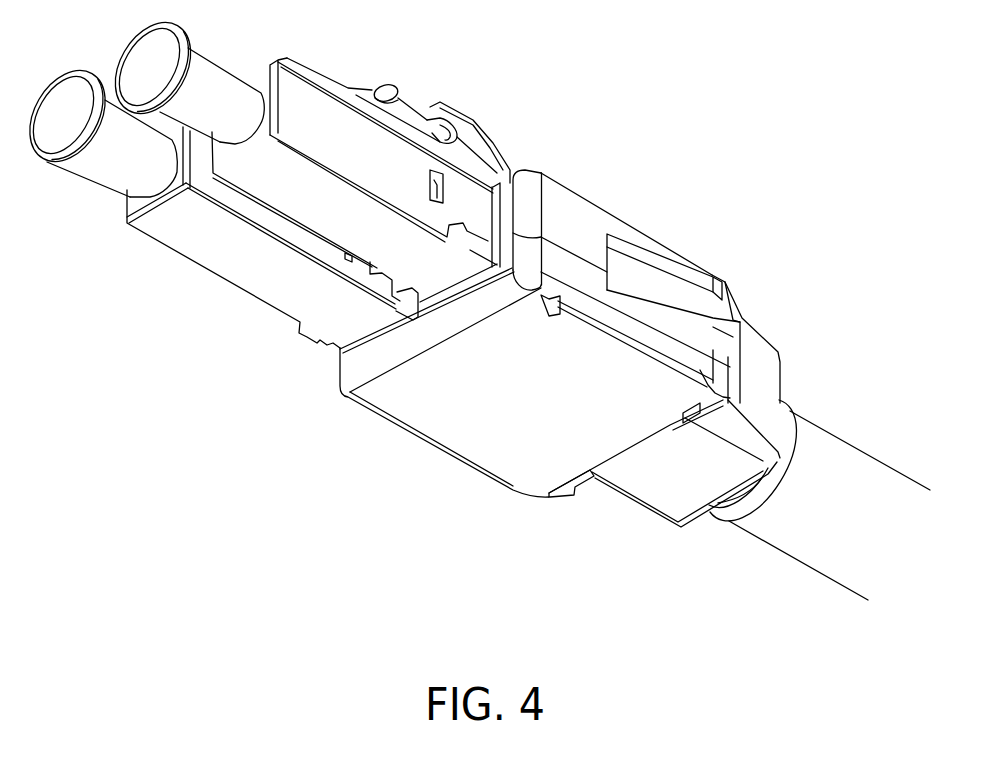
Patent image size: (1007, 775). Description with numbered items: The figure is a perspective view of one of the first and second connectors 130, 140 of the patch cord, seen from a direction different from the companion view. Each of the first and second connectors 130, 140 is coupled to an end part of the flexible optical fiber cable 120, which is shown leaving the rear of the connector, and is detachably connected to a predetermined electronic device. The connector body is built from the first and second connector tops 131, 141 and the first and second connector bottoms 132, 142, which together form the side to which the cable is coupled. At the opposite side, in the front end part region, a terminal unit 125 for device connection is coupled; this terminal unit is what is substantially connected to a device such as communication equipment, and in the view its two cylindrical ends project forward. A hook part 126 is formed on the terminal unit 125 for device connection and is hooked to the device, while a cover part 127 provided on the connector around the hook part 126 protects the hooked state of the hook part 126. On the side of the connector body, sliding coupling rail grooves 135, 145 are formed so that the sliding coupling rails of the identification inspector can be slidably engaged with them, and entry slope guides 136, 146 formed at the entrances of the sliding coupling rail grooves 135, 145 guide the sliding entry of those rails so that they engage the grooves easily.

The optical fiber cable 120 is at (910, 490).
The terminal unit for device connection 125 is at (103, 175).
The hook part 126 is at (413, 112).
The cover part 127 is at (474, 120).
The first connector 130 is at (604, 337).
The second connector 140 is at (868, 187).
The first connector top 131 is at (623, 256).
The second connector top 141 is at (583, 208).
The first connector bottom 132 is at (560, 398).
The second connector bottom 142 is at (475, 455).
The sliding coupling rail groove 135 is at (676, 250).
The sliding coupling rail groove 145 is at (628, 273).
The entry slope guide 136 is at (781, 339).
The entry slope guide 146 is at (762, 353).